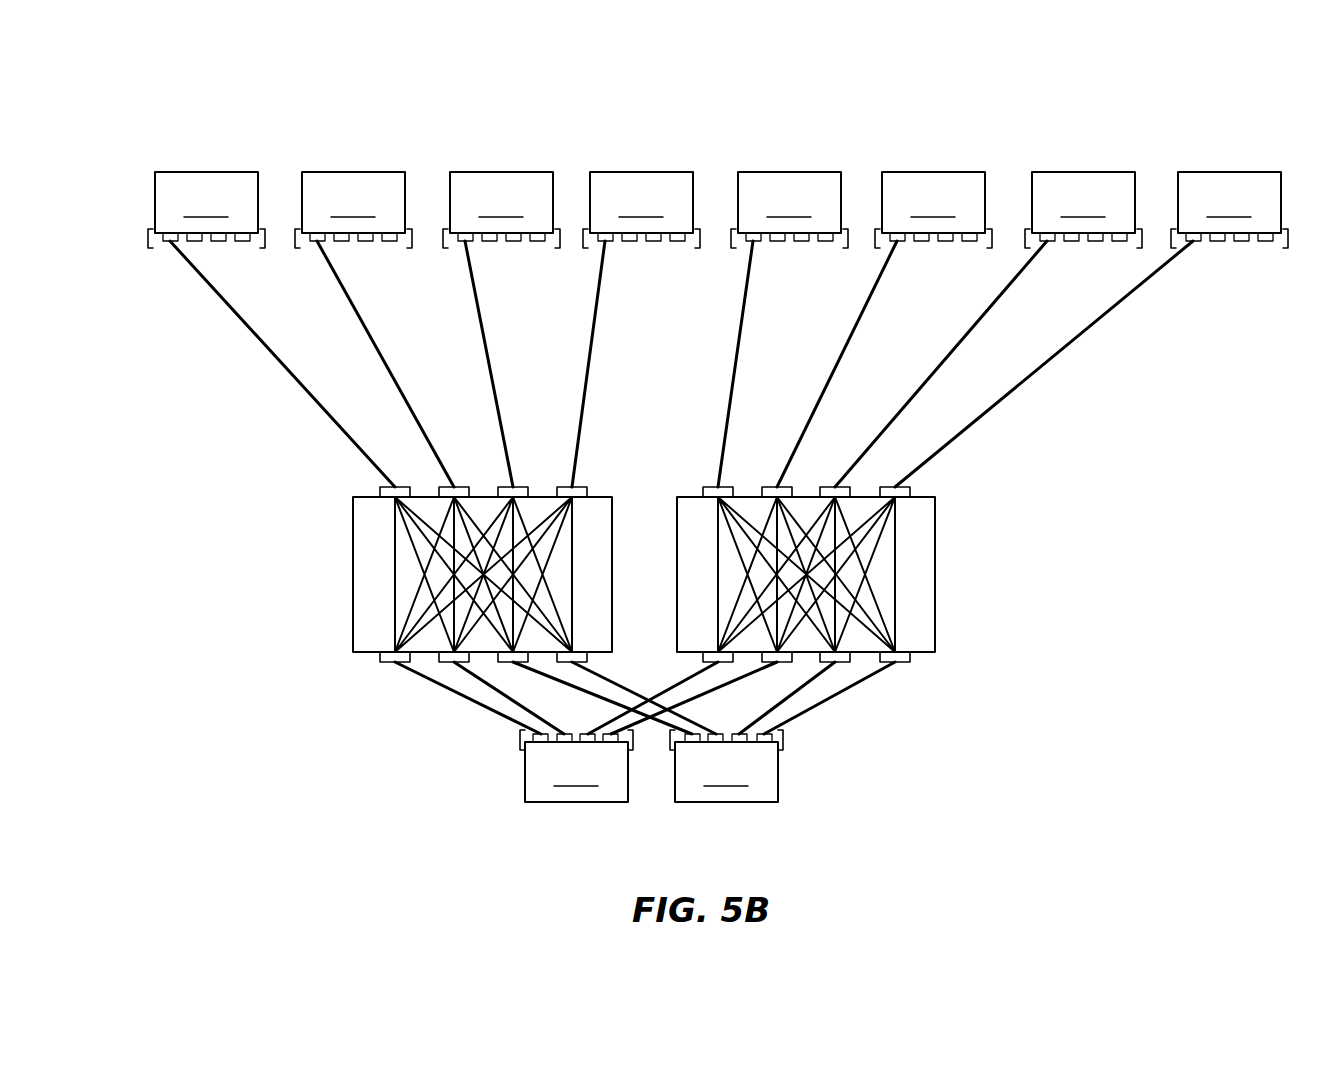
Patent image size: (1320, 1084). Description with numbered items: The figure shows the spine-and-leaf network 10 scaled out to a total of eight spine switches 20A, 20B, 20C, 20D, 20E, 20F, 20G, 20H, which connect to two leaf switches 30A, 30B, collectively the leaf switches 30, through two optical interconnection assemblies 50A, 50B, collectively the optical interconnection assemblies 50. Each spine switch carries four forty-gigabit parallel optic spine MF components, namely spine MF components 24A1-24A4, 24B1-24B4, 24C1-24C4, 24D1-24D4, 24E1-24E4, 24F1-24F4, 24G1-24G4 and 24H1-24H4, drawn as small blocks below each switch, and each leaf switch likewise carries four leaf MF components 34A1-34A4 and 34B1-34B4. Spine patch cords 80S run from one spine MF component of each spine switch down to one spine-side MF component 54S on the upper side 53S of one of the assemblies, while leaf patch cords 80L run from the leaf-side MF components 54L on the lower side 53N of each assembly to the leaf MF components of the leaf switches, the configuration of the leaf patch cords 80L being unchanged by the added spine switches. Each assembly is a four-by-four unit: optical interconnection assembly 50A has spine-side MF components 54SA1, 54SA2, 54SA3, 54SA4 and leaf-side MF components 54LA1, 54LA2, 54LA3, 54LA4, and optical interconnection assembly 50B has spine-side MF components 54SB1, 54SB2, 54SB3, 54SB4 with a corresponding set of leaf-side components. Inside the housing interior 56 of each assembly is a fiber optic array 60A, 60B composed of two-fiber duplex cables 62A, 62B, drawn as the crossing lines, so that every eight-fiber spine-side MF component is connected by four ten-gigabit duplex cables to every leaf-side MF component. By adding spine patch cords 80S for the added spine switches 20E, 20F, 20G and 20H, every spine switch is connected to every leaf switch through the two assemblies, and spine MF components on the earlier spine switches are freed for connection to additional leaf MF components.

The spine-and-leaf (S/F) network 10 is at (221, 102).
The spine switch 20A is at (200, 194).
The spine switch 20B is at (347, 194).
The spine switch 20C is at (495, 194).
The spine switch 20D is at (636, 194).
The spine switch 20E is at (782, 194).
The spine switch 20F is at (926, 194).
The spine switch 20G is at (1078, 194).
The spine switch 20H is at (1224, 194).
The spine MF components 24A1-24A4 is at (147, 238).
The spine MF components 24B1-24B4 is at (294, 238).
The spine MF components 24C1-24C4 is at (442, 238).
The spine MF components 24D1-24D4 is at (582, 238).
The spine MF components 24E1-24E4 is at (730, 238).
The spine MF components 24F1-24F4 is at (874, 238).
The spine MF components 24G1-24G4 is at (1024, 238).
The spine MF components 24H1-24H4 is at (1170, 238).
The spine patch cords 80S is at (1094, 352).
The leaf patch cords 80L is at (499, 725).
The optical interconnection assemblies 50 is at (961, 570).
The optical interconnection assembly 50A is at (352, 545).
The optical interconnection assembly 50B is at (937, 552).
The housing interior 56 is at (366, 518).
The south side 53S is at (686, 497).
The north side 53N is at (686, 654).
The spine-side MF components 54S is at (375, 488).
The leaf-side MF components 54L is at (353, 660).
The spine-side MF component 54SA1 is at (392, 486).
The spine-side MF component 54SA2 is at (452, 486).
The spine-side MF component 54SA3 is at (510, 486).
The spine-side MF component 54SA4 is at (568, 486).
The spine-side MF component 54SB1 is at (722, 486).
The spine-side MF component 54SB2 is at (780, 486).
The spine-side MF component 54SB3 is at (838, 486).
The spine-side MF component 54SB4 is at (898, 486).
The leaf-side MF component 54LA1 is at (395, 664).
The leaf-side MF component 54LA2 is at (452, 664).
The leaf-side MF component 54LA3 is at (510, 664).
The leaf-side MF component 54LA4 is at (568, 664).
The fiber optic array 60A is at (418, 574).
The fiber optic array 60B is at (875, 574).
The 2f cables 62A is at (396, 630).
The 2f cables 62B is at (895, 636).
The leaf switches 30 is at (674, 812).
The leaf switch 30A is at (514, 798).
The leaf switch 30B is at (790, 798).
The leaf MF components 34A1-34A4 is at (520, 738).
The leaf MF components 34B1-34B4 is at (786, 738).